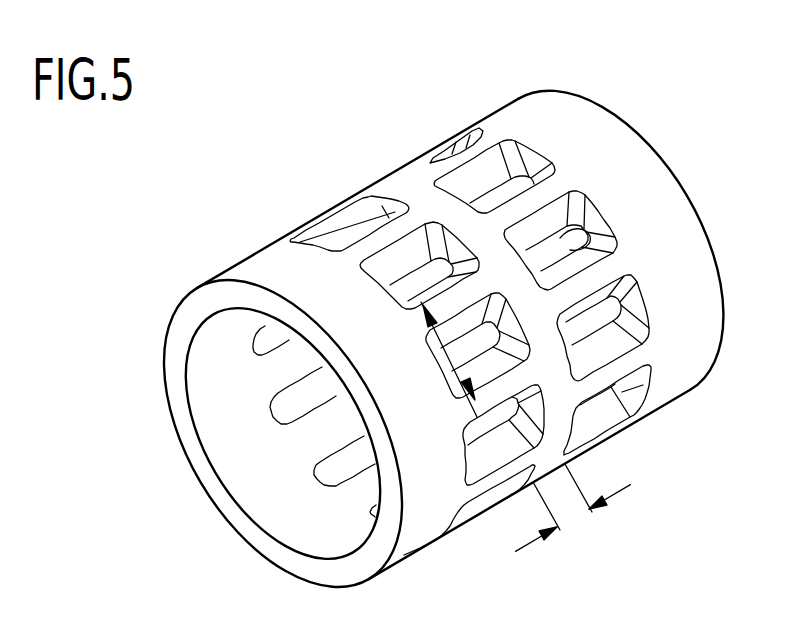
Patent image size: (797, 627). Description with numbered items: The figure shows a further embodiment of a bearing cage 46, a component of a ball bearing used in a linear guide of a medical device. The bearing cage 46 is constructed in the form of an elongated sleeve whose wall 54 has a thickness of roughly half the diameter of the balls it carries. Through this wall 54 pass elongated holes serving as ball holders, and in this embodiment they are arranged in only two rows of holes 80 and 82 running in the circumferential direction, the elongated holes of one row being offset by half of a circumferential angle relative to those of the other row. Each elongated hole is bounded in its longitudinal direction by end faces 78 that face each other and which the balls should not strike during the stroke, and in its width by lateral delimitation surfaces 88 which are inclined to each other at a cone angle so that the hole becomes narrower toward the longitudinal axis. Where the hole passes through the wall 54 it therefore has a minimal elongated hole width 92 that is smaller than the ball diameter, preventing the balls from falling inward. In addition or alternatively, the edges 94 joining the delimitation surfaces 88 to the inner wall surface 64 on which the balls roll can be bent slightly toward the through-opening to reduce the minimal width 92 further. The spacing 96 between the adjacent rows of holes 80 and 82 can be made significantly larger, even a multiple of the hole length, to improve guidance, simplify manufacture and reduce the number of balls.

The bearing cage 46 is at (328, 135).
The wall 54 is at (183, 337).
The inner wall surface 64 is at (232, 427).
The end faces 78 is at (540, 173).
The row of holes 80 is at (305, 217).
The row of holes 82 is at (437, 137).
The lateral delimitation surfaces 88 is at (550, 212).
The minimal elongated hole width 92 is at (450, 360).
The edges 94 is at (560, 230).
The spacing 96 is at (577, 521).